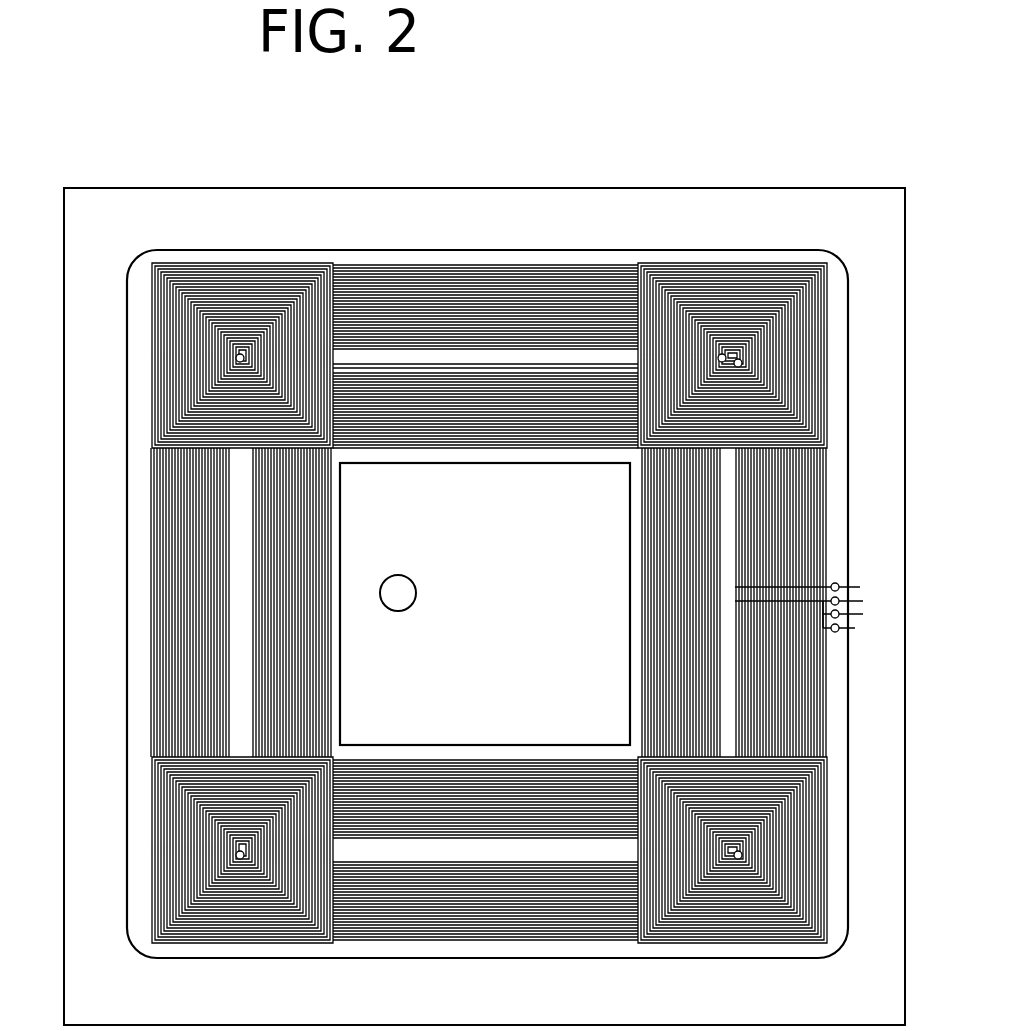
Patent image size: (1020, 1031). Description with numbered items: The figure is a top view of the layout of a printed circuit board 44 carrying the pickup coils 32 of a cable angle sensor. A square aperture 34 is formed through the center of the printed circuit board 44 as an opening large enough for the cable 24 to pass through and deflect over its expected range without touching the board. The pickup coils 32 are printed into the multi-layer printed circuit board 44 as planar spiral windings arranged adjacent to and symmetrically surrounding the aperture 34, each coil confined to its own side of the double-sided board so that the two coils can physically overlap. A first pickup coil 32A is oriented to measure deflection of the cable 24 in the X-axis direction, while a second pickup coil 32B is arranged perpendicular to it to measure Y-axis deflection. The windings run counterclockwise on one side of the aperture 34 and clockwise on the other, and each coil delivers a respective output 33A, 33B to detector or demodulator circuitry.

The printed circuit board 44 is at (505, 178).
The pickup coils 32 is at (731, 300).
The first pickup coil 32A is at (451, 602).
The second pickup coil 32B is at (485, 582).
The aperture 34 is at (485, 604).
The cable 24 is at (450, 596).
The output 33A is at (858, 629).
The output 33B is at (814, 583).